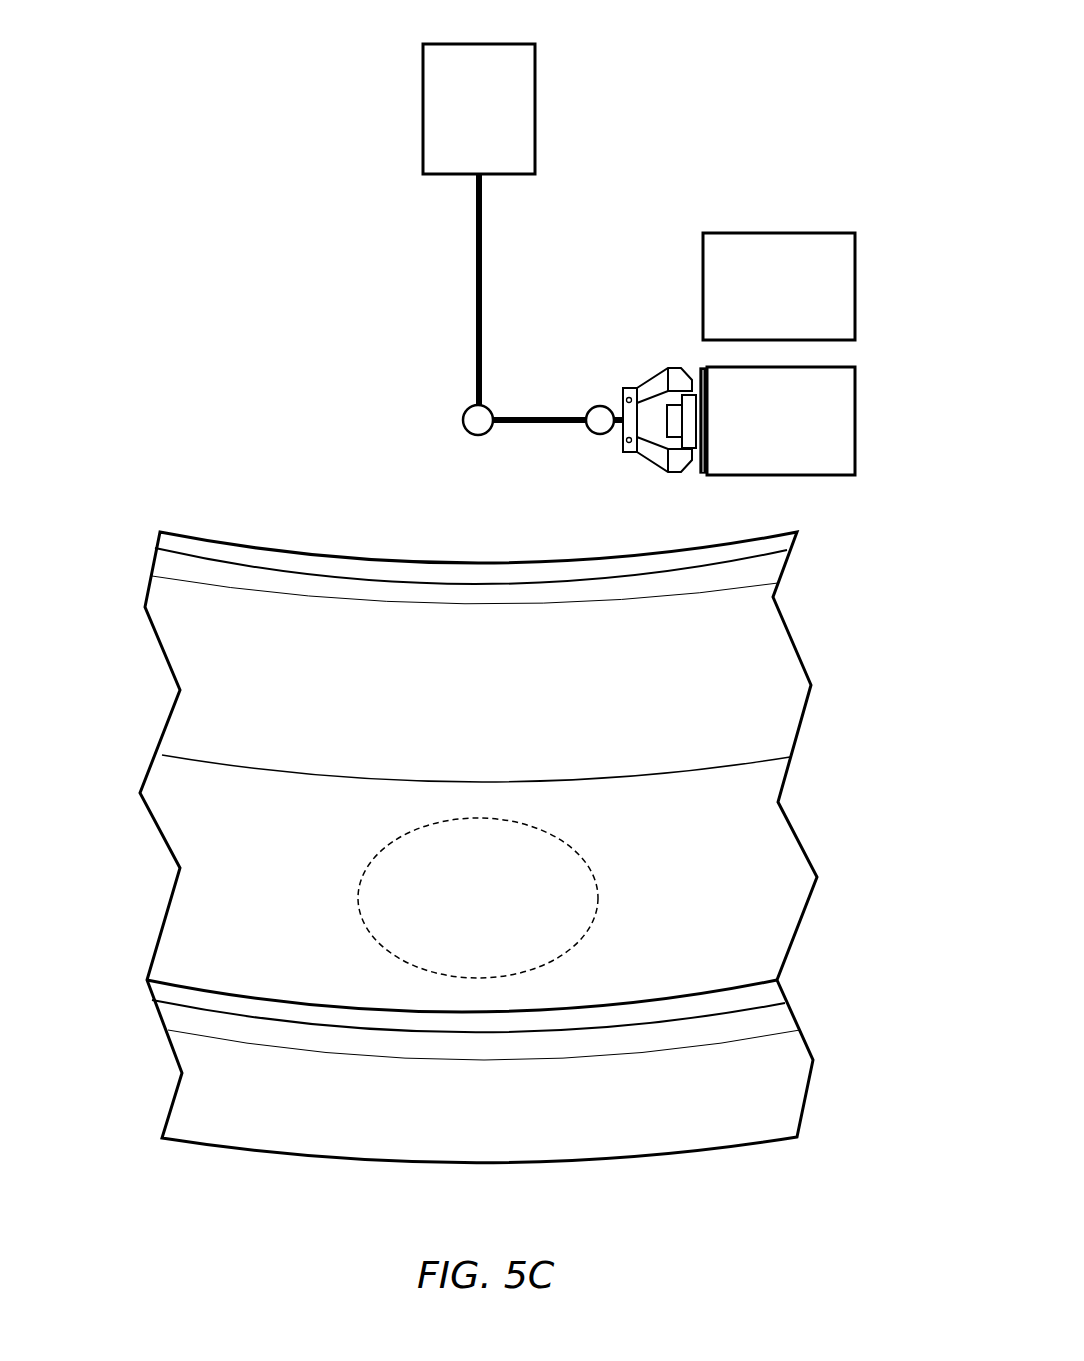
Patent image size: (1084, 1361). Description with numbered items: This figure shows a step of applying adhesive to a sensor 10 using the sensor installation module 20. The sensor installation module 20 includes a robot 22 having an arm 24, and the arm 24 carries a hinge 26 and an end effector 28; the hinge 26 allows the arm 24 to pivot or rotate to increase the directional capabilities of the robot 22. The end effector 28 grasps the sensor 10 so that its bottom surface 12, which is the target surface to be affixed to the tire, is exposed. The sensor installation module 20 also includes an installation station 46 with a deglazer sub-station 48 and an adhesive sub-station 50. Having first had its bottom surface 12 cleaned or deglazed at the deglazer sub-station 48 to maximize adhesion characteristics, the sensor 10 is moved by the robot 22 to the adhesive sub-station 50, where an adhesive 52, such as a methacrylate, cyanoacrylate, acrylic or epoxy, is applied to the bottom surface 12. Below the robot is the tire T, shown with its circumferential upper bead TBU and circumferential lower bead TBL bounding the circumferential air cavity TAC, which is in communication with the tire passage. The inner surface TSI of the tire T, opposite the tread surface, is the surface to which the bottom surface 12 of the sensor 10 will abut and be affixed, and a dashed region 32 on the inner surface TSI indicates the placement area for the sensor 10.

The sensor installation module 20 is at (226, 86).
The robot 22 is at (546, 70).
The arm 24 is at (476, 284).
The hinge 26 is at (463, 418).
The end effector 28 is at (648, 456).
The sensor 10 is at (659, 410).
The bottom surface 12 is at (706, 452).
The installation station 46 is at (300, 320).
The deglazer sub-station 48 is at (862, 268).
The adhesive sub-station 50 is at (862, 400).
The adhesive 52 is at (700, 474).
The installation region 32 is at (600, 890).
The tire T is at (268, 1168).
The circumferential upper bead TBU is at (218, 535).
The circumferential air cavity TAC is at (215, 845).
The circumferential lower bead TBL is at (185, 985).
The inner surface TSI is at (290, 926).